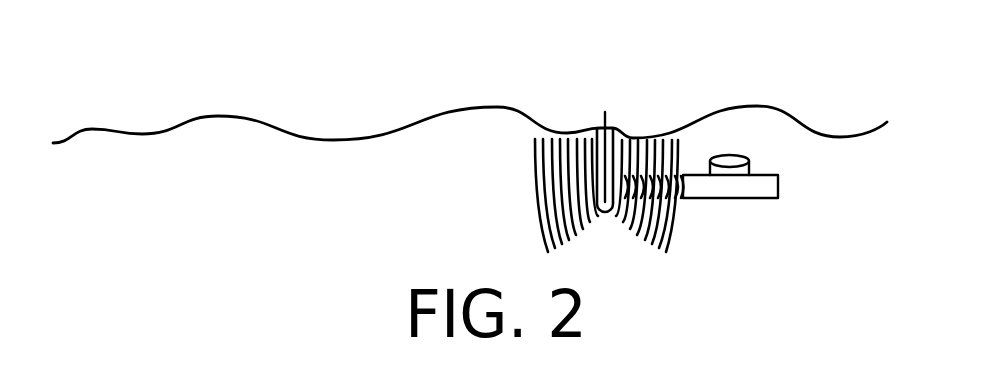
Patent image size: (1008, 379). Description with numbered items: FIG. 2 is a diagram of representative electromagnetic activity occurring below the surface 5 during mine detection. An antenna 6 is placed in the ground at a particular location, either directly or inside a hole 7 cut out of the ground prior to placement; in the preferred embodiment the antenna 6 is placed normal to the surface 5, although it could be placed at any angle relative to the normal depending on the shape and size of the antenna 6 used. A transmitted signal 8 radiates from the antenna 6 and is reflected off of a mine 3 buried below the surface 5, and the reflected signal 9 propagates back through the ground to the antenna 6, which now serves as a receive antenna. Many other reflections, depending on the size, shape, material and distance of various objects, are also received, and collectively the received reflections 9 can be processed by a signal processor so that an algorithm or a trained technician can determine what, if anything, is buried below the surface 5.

The mine 3 is at (750, 198).
The surface 5 is at (836, 136).
The antenna 6 is at (610, 121).
The hole 7 is at (597, 126).
The transmitted signal 8 is at (676, 226).
The reflected signal 9 is at (649, 205).